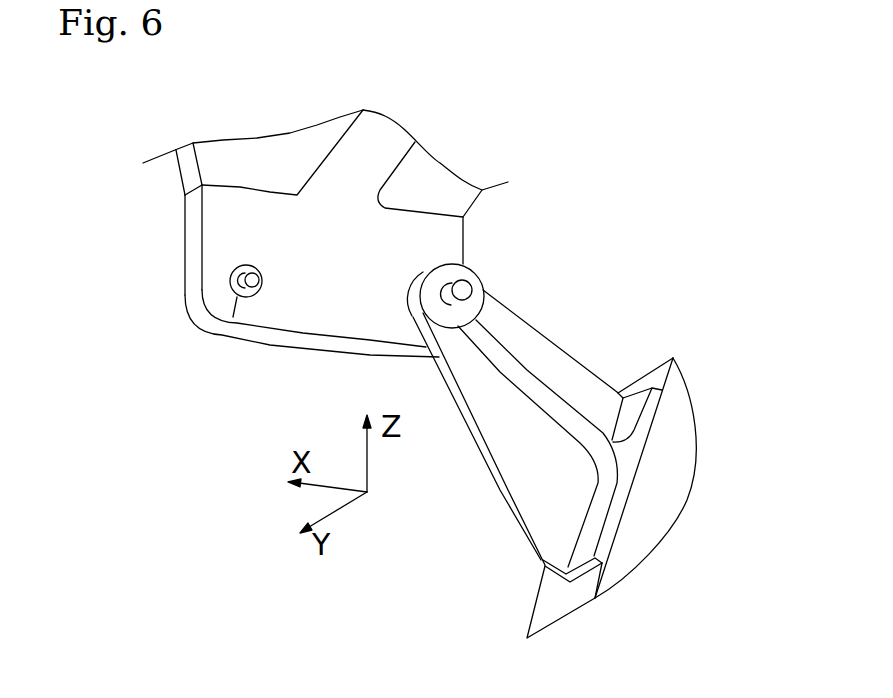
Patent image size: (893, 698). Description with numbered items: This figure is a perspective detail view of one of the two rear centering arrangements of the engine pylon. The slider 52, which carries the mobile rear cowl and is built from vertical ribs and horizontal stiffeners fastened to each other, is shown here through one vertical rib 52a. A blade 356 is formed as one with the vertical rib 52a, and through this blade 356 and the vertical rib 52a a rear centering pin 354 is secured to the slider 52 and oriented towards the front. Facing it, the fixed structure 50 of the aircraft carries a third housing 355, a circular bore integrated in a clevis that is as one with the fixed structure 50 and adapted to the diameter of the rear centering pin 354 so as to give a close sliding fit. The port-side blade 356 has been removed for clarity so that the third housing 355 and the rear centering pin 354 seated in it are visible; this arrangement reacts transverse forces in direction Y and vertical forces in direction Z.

The fixed structure 50 is at (210, 216).
The rear centering pin 354 is at (230, 274).
The third housing 355 is at (228, 333).
The blade 356 is at (575, 380).
The vertical rib 52a is at (680, 453).
The slider 52 is at (710, 571).